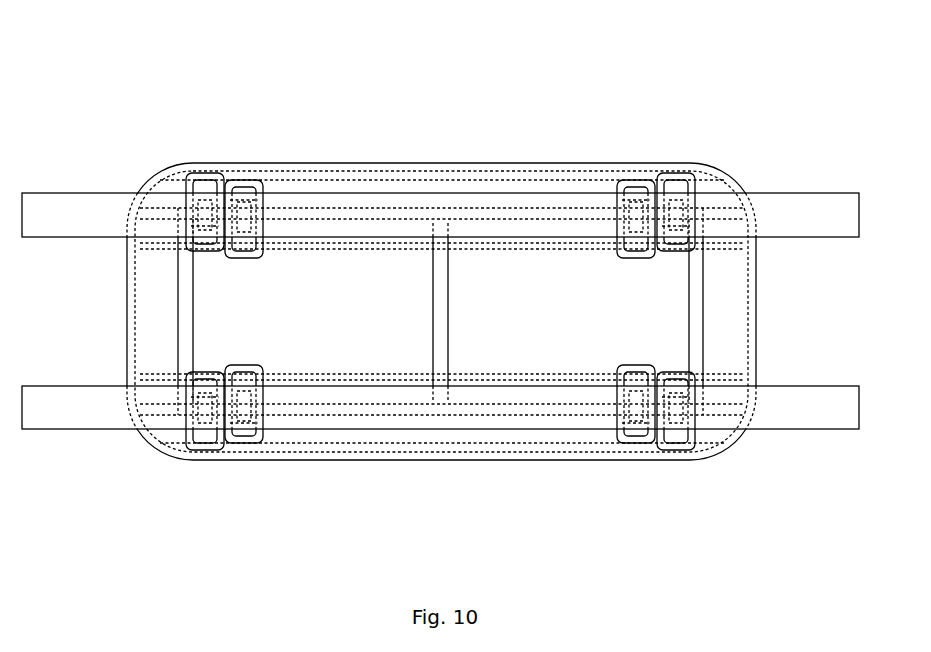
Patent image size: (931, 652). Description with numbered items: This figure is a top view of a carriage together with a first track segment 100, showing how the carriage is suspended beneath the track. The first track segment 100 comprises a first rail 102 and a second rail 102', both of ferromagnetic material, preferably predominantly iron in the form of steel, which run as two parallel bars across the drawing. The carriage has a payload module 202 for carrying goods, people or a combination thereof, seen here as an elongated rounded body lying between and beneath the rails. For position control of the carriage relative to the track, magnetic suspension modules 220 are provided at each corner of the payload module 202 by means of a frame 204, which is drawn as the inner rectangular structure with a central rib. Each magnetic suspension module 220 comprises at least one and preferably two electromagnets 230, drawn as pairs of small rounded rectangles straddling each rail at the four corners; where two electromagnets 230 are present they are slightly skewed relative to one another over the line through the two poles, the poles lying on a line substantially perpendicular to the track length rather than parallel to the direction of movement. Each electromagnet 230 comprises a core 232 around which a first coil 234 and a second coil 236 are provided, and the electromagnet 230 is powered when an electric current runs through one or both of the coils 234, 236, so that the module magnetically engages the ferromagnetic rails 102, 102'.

The first track segment 100 is at (450, 285).
The first rail 102 is at (440, 131).
The second rail 102' is at (440, 465).
The payload module 202 is at (193, 458).
The frame 204 is at (435, 348).
The magnetic suspension module 220 is at (662, 148).
The electromagnet 230 is at (236, 166).
The core 232 is at (240, 197).
The first coil 234 is at (258, 193).
The second coil 236 is at (262, 228).